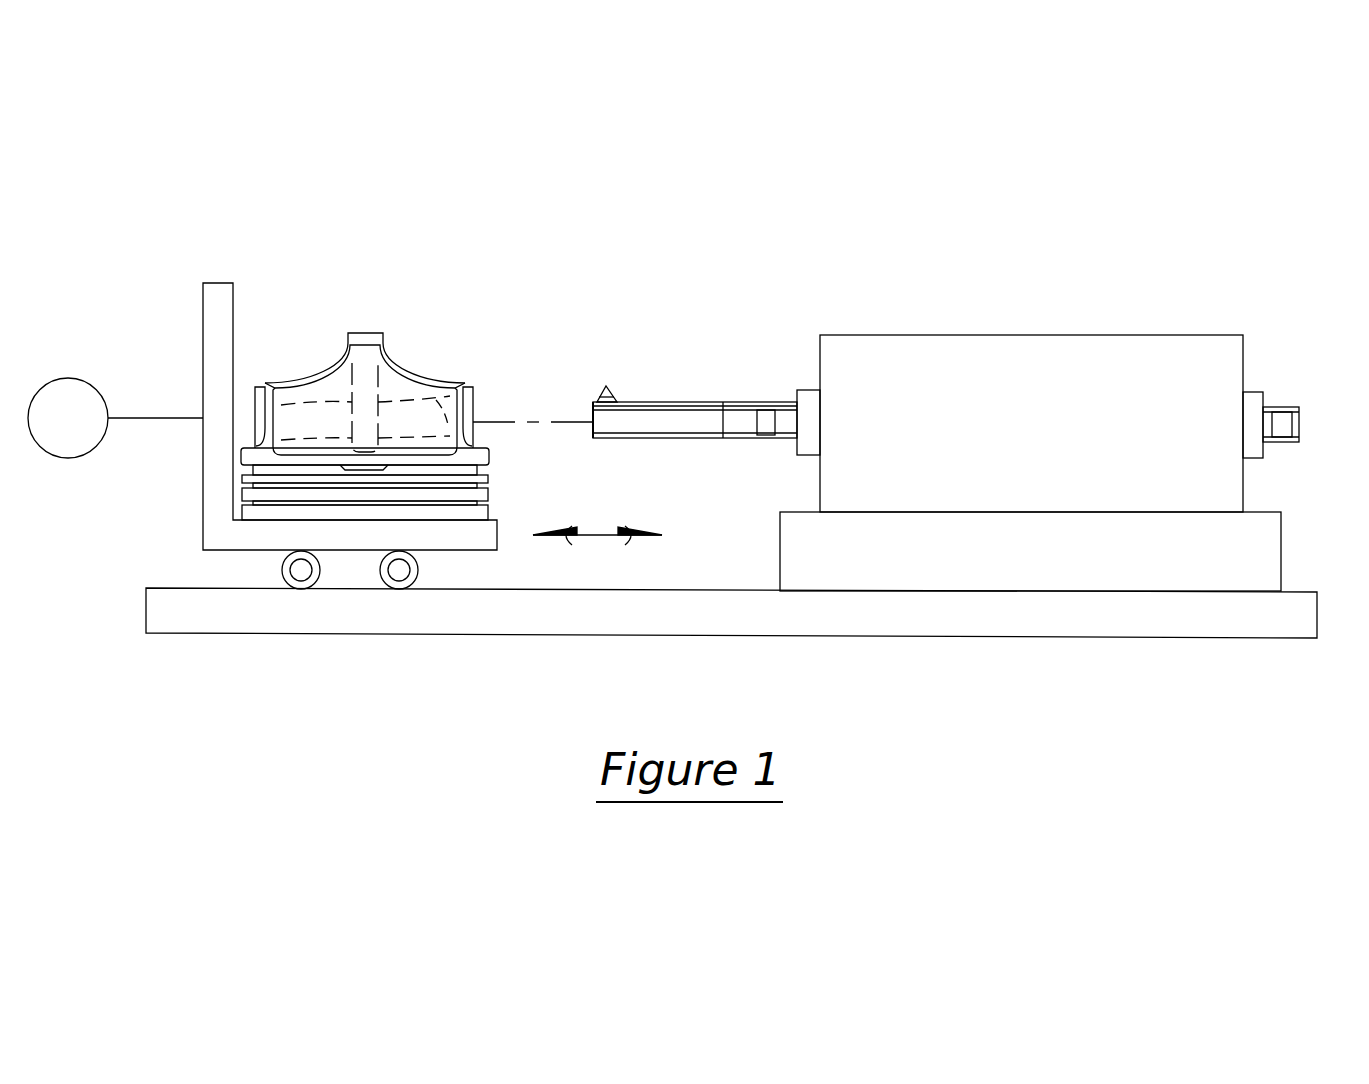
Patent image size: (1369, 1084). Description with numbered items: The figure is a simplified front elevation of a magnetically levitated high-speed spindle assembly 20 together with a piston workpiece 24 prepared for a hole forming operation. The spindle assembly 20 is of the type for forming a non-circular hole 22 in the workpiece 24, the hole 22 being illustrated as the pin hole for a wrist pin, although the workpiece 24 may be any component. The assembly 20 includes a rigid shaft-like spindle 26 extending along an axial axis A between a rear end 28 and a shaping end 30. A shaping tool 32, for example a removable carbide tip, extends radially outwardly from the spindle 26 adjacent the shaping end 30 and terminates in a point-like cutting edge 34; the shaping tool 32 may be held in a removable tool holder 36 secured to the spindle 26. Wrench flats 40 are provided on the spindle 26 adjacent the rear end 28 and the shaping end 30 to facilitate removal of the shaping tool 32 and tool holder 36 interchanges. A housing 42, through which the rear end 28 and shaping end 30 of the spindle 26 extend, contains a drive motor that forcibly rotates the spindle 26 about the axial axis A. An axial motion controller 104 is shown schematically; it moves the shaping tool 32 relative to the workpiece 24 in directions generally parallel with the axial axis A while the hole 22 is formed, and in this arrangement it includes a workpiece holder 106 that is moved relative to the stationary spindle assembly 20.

The spindle assembly 20 is at (1216, 296).
The non-circular hole 22 is at (485, 400).
The workpiece 24 is at (363, 335).
The spindle 26 is at (750, 400).
The rear end 28 is at (1299, 407).
The shaping end 30 is at (592, 413).
The shaping tool 32 is at (616, 393).
The cutting edge 34 is at (607, 388).
The tool holder 36 is at (667, 432).
The wrench flats 40 is at (767, 423).
The housing 42 is at (907, 350).
The axial axis A is at (572, 422).
The axial motion controller 104 is at (55, 395).
The workpiece holder 106 is at (217, 295).